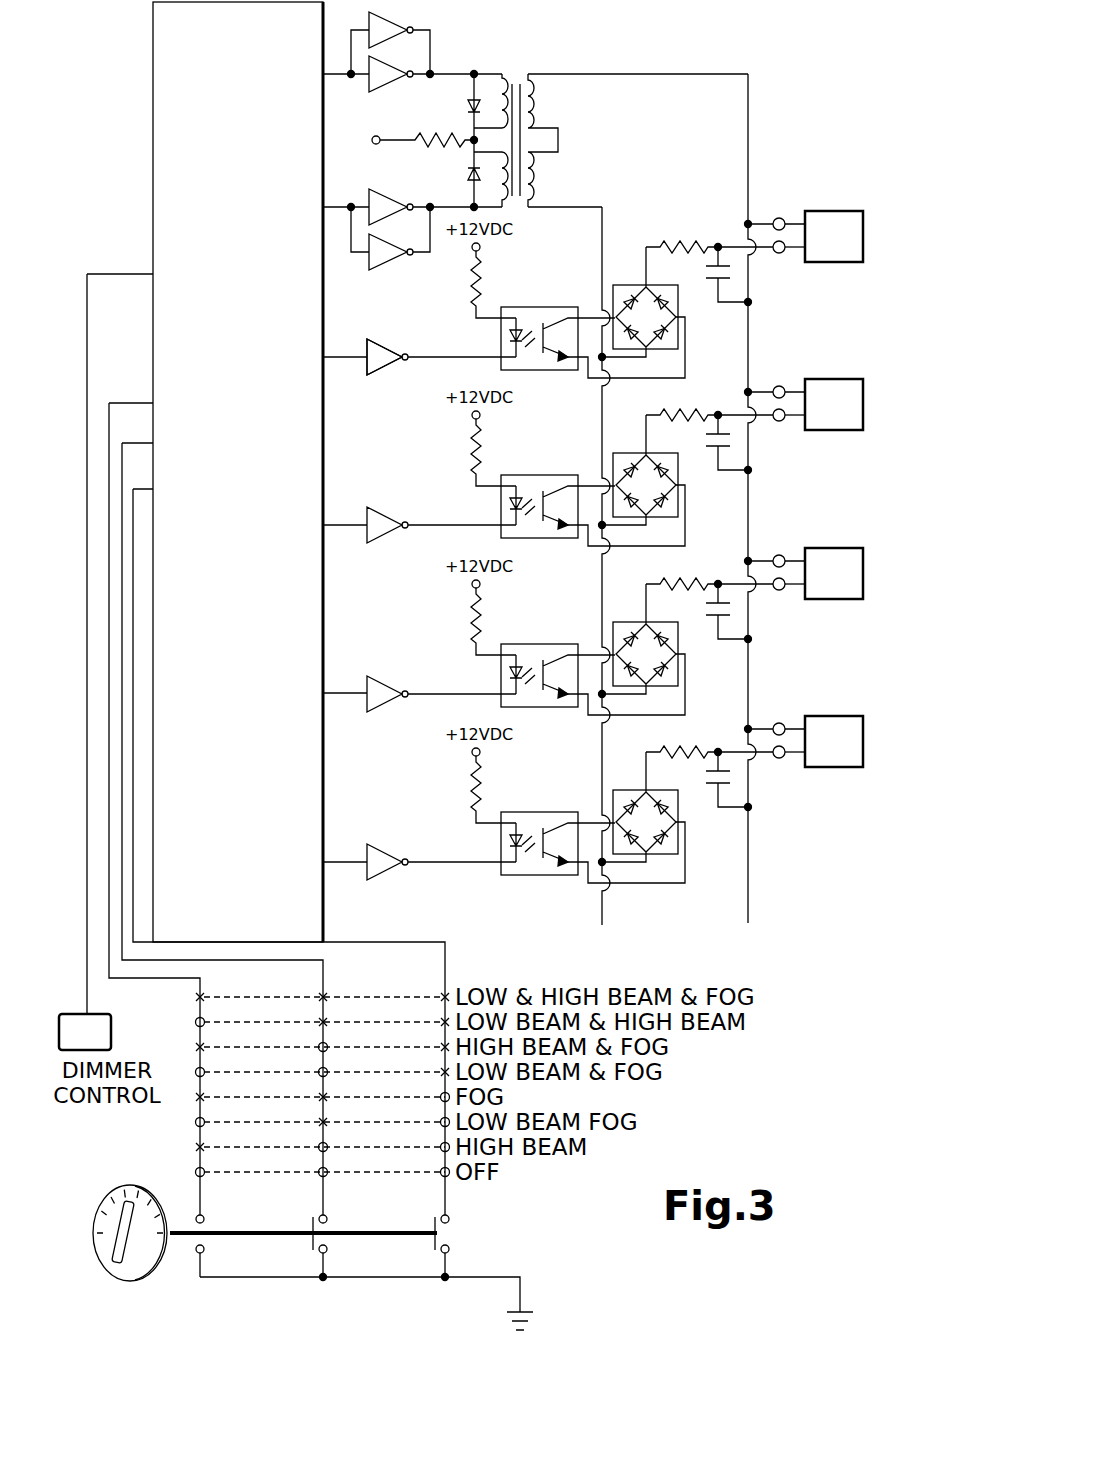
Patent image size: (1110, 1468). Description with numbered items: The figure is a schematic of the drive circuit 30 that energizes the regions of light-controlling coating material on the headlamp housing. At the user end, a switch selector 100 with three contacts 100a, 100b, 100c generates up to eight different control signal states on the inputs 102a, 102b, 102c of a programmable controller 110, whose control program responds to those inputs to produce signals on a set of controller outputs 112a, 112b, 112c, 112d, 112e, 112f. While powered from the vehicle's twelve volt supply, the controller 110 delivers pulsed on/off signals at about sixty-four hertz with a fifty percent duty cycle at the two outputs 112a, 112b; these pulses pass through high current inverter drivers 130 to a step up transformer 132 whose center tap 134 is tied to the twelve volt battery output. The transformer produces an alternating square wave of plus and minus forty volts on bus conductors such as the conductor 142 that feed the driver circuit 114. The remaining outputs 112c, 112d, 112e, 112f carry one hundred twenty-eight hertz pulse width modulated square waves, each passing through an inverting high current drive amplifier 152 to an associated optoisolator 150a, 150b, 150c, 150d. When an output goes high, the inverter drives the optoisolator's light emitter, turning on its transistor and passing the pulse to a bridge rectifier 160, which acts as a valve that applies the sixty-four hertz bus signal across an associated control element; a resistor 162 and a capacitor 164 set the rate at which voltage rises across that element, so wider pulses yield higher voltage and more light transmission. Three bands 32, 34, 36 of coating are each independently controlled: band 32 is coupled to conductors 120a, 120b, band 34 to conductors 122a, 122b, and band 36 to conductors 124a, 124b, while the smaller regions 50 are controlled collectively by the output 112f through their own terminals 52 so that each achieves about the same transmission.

The drive circuit 30 is at (794, 106).
The band of coating material 32 is at (836, 232).
The band of coating material 34 is at (853, 382).
The band of coating material 36 is at (853, 551).
The small regions or patches of coating material 50 is at (857, 731).
The auxiliary lamp terminals 52 is at (794, 743).
The switch selector 100 is at (130, 1195).
The switch contact 100a is at (206, 1240).
The switch contact 100b is at (323, 1240).
The switch contact 100c is at (455, 1237).
The controller input 102a is at (135, 748).
The controller input 102b is at (125, 772).
The controller input 102c is at (112, 795).
The programmable controller 110 is at (173, 137).
The controller output 112a is at (331, 82).
The controller output 112b is at (331, 214).
The controller output 112c is at (336, 352).
The controller output 112d is at (341, 530).
The controller output 112e is at (342, 690).
The controller output 112f is at (342, 858).
The driver circuit 114 is at (649, 900).
The conductor 120a is at (797, 222).
The conductor 120b is at (794, 250).
The conductor 122a is at (803, 353).
The conductor 122b is at (828, 441).
The conductor 124a is at (803, 522).
The conductor 124b is at (828, 610).
The high current inverter driver 130 is at (418, 15).
The step up transformer 132 is at (553, 108).
The center tap 134 is at (486, 141).
The bus conductor 142 is at (556, 211).
The optoisolator 150a is at (540, 372).
The optoisolator 150b is at (593, 533).
The optoisolator 150c is at (593, 702).
The optoisolator 150d is at (593, 871).
The inverting high current drive amplifier 152 is at (376, 524).
The bridge rectifier 160 is at (629, 277).
The resistor 162 is at (690, 240).
The capacitor 164 is at (735, 282).